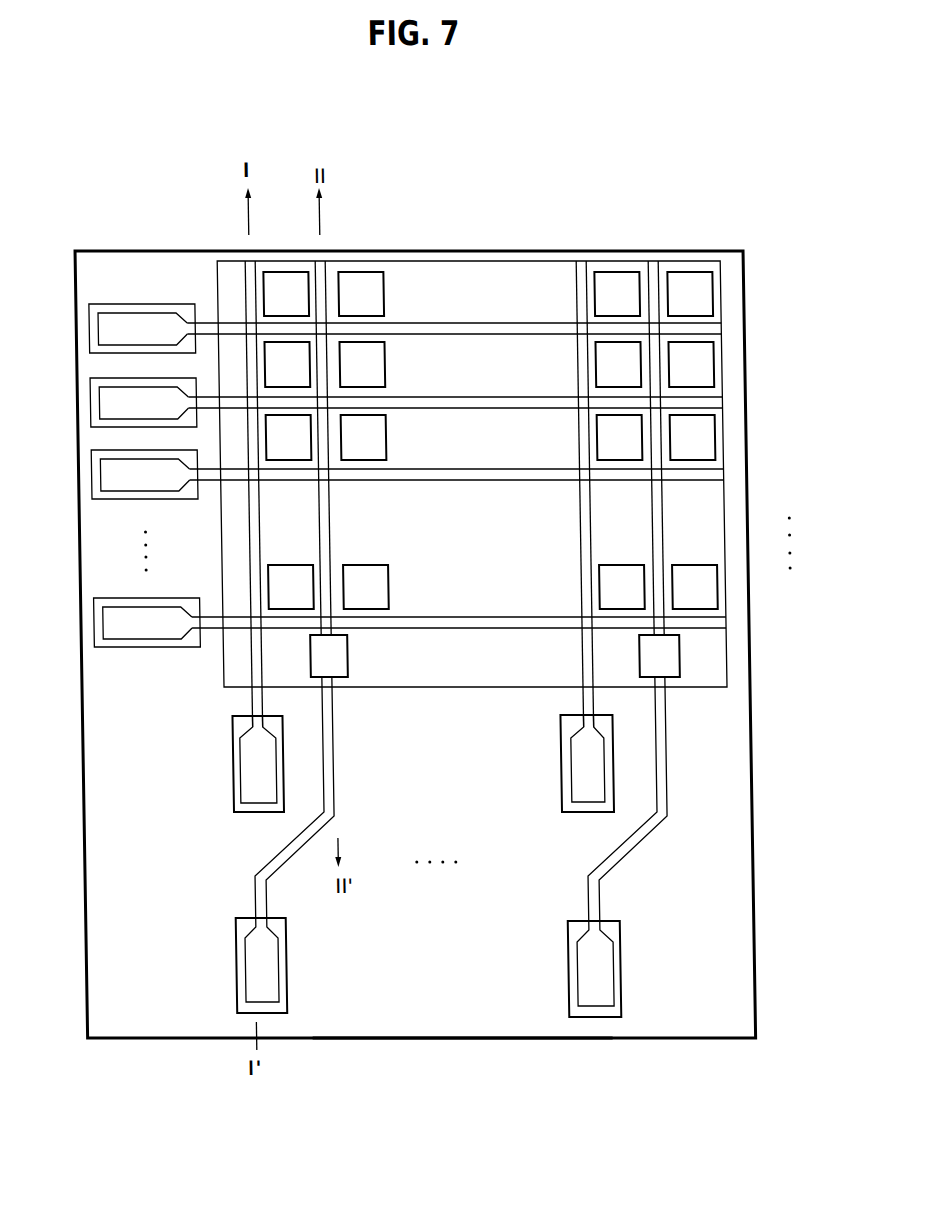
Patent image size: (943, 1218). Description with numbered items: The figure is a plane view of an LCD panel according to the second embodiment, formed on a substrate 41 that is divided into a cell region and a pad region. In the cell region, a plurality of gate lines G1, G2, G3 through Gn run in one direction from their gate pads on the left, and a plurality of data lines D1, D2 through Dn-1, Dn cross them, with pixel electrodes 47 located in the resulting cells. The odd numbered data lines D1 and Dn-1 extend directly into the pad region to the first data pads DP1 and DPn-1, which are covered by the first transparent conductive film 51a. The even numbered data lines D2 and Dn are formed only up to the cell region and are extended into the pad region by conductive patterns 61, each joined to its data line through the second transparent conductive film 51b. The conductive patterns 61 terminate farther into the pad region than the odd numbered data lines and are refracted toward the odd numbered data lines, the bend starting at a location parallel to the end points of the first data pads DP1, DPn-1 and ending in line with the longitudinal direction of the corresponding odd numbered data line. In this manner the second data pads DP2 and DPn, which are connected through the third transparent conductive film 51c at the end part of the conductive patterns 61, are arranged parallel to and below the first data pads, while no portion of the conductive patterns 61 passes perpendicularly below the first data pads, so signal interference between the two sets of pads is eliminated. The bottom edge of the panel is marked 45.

The substrate 41 is at (744, 755).
The gate insulating layer 45 is at (463, 1043).
The pixel electrode 47 is at (697, 291).
The first transparent conductive film 51a is at (214, 764).
The second transparent conductive film 51b is at (333, 653).
The third transparent conductive film 51c is at (218, 965).
The conductive pattern 61 is at (326, 778).
The data line D1 is at (252, 268).
The data line D2 is at (322, 268).
The data line Dn-1 is at (577, 263).
The data line Dn is at (653, 263).
The gate line G1 is at (715, 326).
The gate line G2 is at (715, 402).
The gate line G3 is at (716, 469).
The gate line Gn is at (712, 622).
The first data pad DP1 is at (237, 753).
The second data pad DP2 is at (236, 948).
The first data pad DPn-1 is at (572, 763).
The second data pad DPn is at (578, 968).